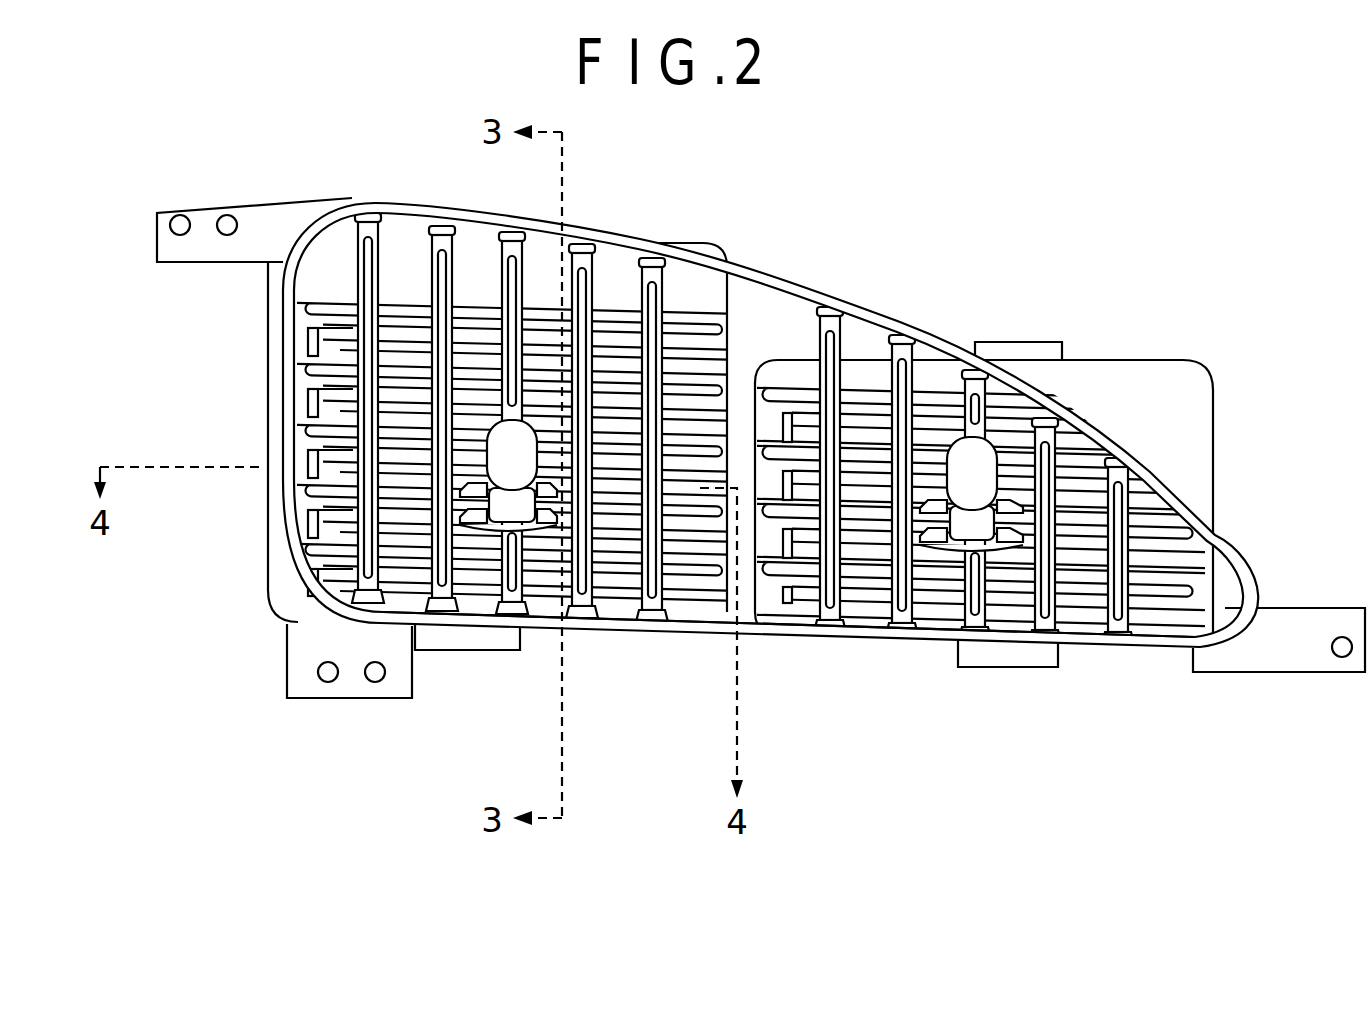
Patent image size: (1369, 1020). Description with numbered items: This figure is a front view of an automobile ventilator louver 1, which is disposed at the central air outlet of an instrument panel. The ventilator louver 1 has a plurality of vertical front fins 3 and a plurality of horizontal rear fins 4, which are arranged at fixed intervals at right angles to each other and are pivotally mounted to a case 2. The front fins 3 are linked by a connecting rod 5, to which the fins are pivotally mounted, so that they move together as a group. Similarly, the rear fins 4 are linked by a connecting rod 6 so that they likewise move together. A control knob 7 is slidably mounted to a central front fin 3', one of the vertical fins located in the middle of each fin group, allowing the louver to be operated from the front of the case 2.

The ventilator louver 1 is at (790, 283).
The case 2 is at (865, 318).
The front fins 3 is at (731, 493).
The central front fin 3' is at (731, 497).
The rear fins 4 is at (333, 325).
The connecting rod 5 is at (603, 612).
The connecting rod 6 is at (313, 352).
The control knob 7 is at (500, 455).